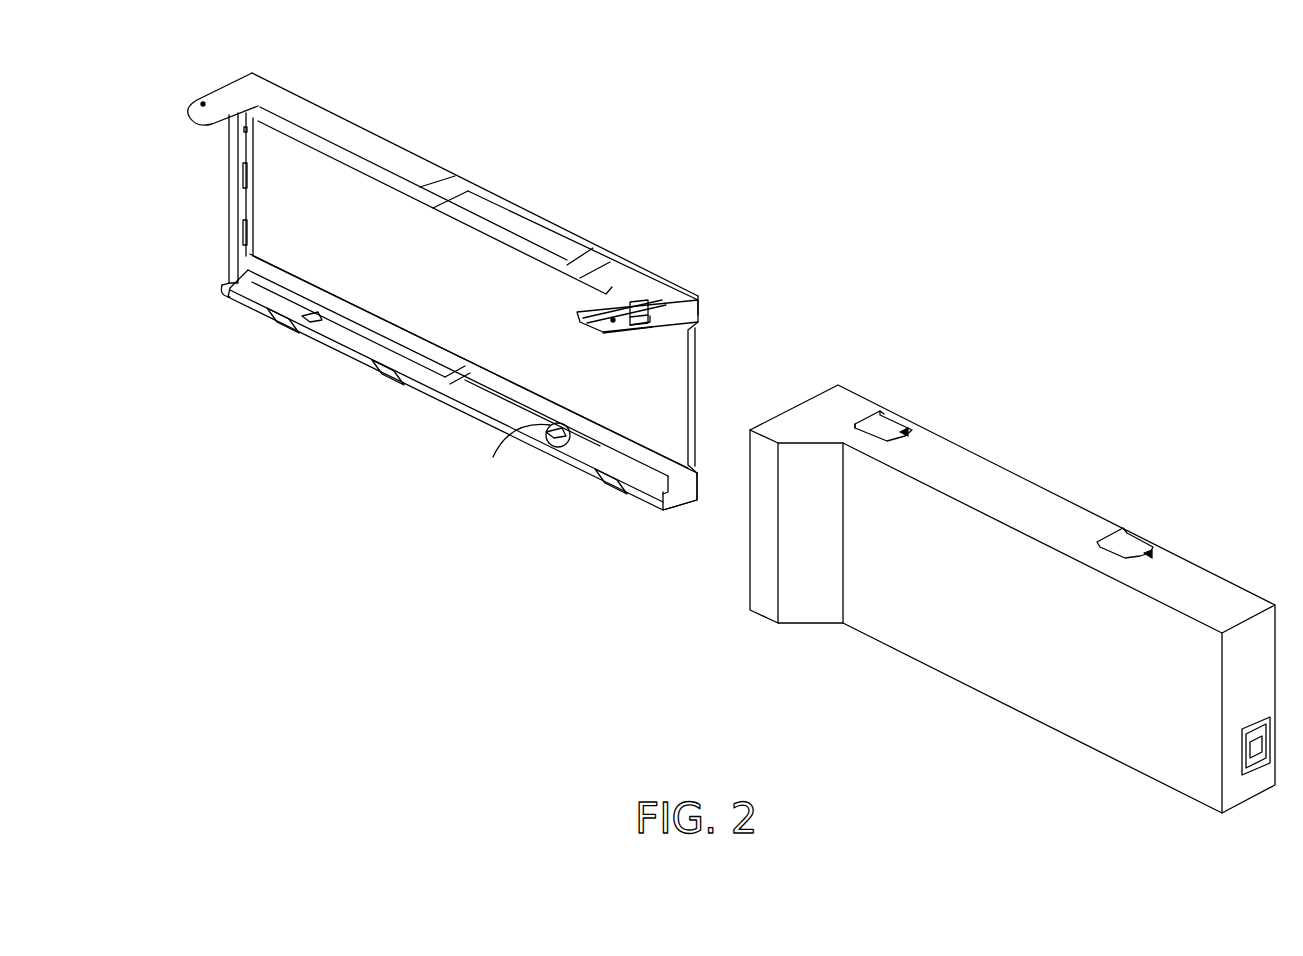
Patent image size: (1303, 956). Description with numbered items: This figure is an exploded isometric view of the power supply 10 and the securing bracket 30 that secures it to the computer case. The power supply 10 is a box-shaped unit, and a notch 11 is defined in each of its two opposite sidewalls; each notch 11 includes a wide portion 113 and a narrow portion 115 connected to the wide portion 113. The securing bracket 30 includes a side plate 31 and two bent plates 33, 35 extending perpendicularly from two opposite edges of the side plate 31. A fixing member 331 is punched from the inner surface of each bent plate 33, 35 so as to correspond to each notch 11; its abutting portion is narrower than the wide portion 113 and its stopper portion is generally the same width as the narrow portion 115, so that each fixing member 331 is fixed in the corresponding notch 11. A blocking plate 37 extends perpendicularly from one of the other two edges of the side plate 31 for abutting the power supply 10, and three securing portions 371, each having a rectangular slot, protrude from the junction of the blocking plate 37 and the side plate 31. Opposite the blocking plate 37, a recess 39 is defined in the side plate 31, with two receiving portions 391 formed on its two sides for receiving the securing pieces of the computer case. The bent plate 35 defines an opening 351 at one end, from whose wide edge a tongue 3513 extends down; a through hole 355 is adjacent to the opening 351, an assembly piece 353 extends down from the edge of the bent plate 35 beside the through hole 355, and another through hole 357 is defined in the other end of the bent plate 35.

The power supply 10 is at (1012, 448).
The notch 11 is at (1200, 519).
The wide portion 113 is at (1125, 548).
The narrow portion 115 is at (1148, 557).
The securing bracket 30 is at (437, 136).
The side plate 31 is at (270, 213).
The bent plate 33 is at (348, 338).
The fixing member 331 is at (553, 446).
The bent plate 35 is at (612, 272).
The opening 351 is at (636, 305).
The tongue 3513 is at (650, 320).
The assembly piece 353 is at (633, 330).
The through hole 355 is at (613, 322).
The through hole 357 is at (203, 104).
The blocking plate 37 is at (245, 262).
The securing portion 371 is at (246, 175).
The recess 39 is at (692, 340).
The receiving portion 391 is at (693, 483).